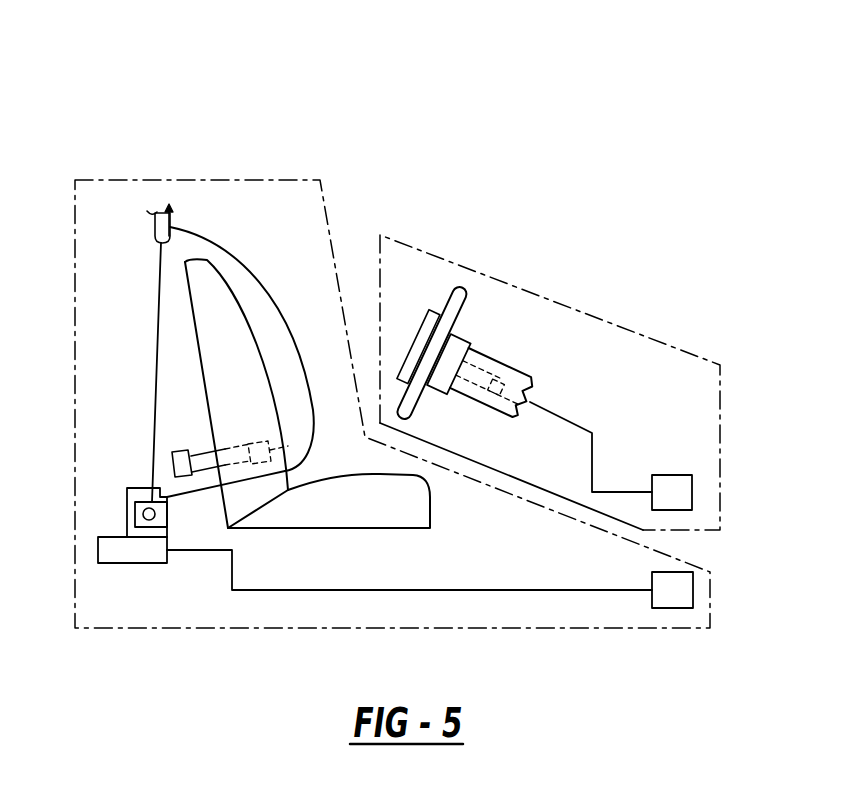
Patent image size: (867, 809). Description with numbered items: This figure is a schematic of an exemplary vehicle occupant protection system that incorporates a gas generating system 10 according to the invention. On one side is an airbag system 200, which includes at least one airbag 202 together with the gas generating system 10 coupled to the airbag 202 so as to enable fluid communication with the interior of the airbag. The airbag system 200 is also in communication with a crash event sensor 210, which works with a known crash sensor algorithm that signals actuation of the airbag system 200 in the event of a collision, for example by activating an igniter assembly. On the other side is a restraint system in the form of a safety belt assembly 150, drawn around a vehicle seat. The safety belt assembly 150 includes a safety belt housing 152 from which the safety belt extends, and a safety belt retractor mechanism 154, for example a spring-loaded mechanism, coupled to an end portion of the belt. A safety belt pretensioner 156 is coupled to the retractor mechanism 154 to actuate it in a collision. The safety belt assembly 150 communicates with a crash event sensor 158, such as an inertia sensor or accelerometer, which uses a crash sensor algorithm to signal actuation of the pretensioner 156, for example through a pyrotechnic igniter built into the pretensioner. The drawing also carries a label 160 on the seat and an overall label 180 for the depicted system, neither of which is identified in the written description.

The gas generating system 10 is at (493, 365).
The safety belt assembly 150 is at (242, 172).
The safety belt housing 152 is at (135, 515).
The safety belt retractor mechanism 154 is at (127, 489).
The safety belt pretensioner 156 is at (120, 563).
The crash event sensor 158 is at (668, 608).
The vehicle seat 160 is at (209, 235).
The vehicle system 180 is at (527, 137).
The airbag system 200 is at (644, 328).
The airbag 202 is at (472, 314).
The crash event sensor 210 is at (670, 475).